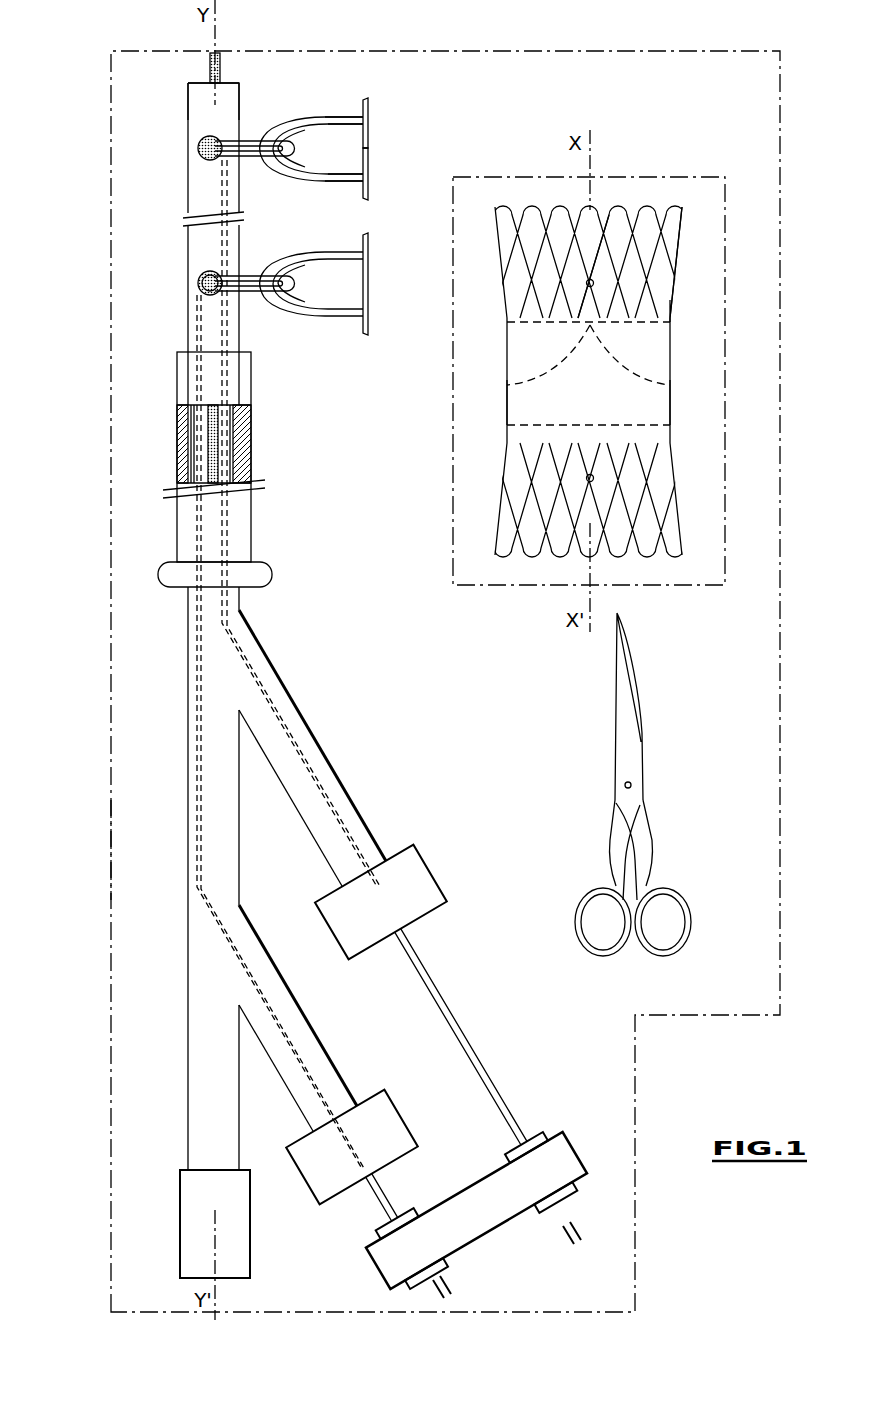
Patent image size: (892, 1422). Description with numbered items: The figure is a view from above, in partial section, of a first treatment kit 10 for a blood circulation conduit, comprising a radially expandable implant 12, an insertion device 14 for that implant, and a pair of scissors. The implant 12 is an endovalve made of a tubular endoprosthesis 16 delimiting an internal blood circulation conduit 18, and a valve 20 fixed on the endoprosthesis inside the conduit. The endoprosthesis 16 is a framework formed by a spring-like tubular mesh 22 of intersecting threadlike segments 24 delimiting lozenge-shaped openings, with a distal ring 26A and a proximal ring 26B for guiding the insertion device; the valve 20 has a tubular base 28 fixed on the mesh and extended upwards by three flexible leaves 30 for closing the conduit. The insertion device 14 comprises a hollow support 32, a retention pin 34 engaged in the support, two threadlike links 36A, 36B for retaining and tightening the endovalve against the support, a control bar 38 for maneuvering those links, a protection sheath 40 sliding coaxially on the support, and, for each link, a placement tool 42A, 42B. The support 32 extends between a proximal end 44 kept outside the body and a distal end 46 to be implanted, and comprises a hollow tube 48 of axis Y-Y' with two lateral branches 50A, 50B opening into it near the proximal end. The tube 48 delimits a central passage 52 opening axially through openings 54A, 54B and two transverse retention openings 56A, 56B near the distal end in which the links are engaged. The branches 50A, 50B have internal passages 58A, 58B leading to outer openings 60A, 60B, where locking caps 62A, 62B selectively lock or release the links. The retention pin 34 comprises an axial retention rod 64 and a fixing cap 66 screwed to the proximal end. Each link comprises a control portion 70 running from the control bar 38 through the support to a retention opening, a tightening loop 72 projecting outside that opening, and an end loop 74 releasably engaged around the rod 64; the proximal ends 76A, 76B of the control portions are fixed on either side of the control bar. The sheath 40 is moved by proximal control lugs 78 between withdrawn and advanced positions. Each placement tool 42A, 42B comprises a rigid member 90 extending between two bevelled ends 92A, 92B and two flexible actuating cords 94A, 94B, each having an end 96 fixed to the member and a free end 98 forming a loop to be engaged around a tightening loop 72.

The treatment kit 10 is at (98, 850).
The radially expandable implant 12 is at (621, 163).
The insertion device 14 is at (112, 90).
The tubular endoprosthesis 16 is at (668, 308).
The internal blood circulation conduit 18 is at (640, 222).
The valve 20 is at (648, 356).
The tubular mesh 22 is at (650, 260).
The threadlike segments 24 is at (530, 495).
The distal ring 26A is at (596, 283).
The proximal ring 26B is at (596, 478).
The tubular base 28 is at (535, 400).
The flexible leaves 30 is at (550, 370).
The hollow support 32 is at (180, 210).
The retention pin 34 is at (223, 68).
The threadlike link 36A is at (251, 126).
The threadlike link 36B is at (251, 305).
The control bar 38 is at (497, 1184).
The sheath 40 is at (252, 418).
The placement tool 42A is at (366, 135).
The placement tool 42B is at (330, 252).
The proximal end 44 is at (188, 1145).
The distal end 46 is at (198, 100).
The hollow tube 48 is at (190, 455).
The lateral branch 50A is at (322, 760).
The lateral branch 50B is at (295, 1010).
The central passage 52 is at (205, 425).
The axial opening 54A is at (197, 84).
The axial opening 54B is at (205, 1173).
The transverse retention opening 56A is at (200, 152).
The transverse retention opening 56B is at (205, 275).
The internal passage 58A is at (360, 808).
The internal passage 58B is at (330, 1055).
The outer opening 60A is at (380, 862).
The outer opening 60B is at (355, 1112).
The locking cap 62A is at (423, 887).
The locking cap 62B is at (397, 1130).
The retention rod 64 is at (212, 478).
The fixing cap 66 is at (195, 1255).
The control portion 70 is at (230, 450).
The loop 72 is at (258, 140).
The end loop 74 is at (205, 283).
The proximal end 76A is at (530, 1138).
The proximal end 76B is at (380, 1222).
The proximal control lugs 78 is at (180, 590).
The rigid member 90 is at (368, 120).
The end 92A is at (367, 100).
The end 92B is at (367, 192).
The flexible actuating cord 94A is at (330, 118).
The flexible actuating cord 94B is at (330, 182).
The end 96 is at (368, 173).
The free end 98 is at (303, 148).